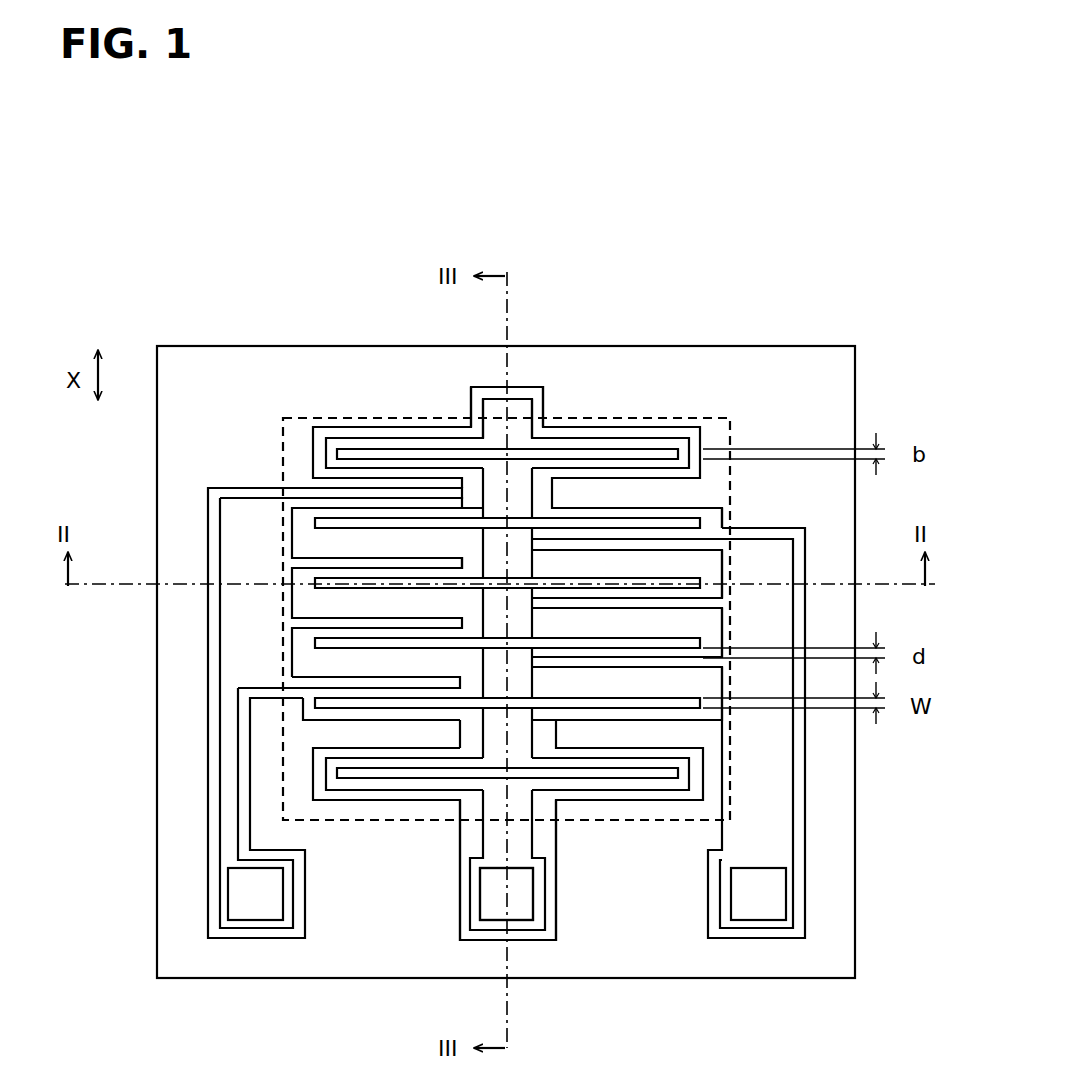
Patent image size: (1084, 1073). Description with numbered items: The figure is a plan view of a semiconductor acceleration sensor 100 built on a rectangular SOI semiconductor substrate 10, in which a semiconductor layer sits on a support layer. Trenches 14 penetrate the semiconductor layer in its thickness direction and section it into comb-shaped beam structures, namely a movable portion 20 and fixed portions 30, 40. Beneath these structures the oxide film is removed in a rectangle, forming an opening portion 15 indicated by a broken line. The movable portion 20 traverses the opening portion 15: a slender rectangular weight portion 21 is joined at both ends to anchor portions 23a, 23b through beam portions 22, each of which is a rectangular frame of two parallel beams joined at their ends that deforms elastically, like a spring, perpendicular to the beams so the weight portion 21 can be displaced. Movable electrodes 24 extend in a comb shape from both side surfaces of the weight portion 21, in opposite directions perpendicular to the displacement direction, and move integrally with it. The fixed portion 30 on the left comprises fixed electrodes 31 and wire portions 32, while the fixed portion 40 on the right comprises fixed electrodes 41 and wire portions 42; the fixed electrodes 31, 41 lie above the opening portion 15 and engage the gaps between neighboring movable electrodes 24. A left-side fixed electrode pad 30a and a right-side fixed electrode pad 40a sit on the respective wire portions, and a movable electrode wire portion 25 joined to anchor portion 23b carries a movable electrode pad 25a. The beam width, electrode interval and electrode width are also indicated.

The semiconductor acceleration sensor 100 is at (228, 340).
The semiconductor substrate 10 is at (737, 342).
The trenches 14 is at (805, 765).
The opening portion 15 is at (306, 416).
The movable portion 20 is at (411, 665).
The weight portion 21 is at (497, 548).
The beam portions 22 is at (612, 440).
The anchor portion 23a is at (487, 393).
The anchor portion 23b is at (480, 850).
The movable electrodes 24 is at (655, 520).
The movable electrode wire portion 25 is at (535, 890).
The movable electrode pad 25a is at (510, 905).
The fixed portion 30 is at (281, 759).
The left-side fixed electrode pad 30a is at (250, 905).
The fixed electrodes 31 is at (380, 682).
The wire portions 32 is at (240, 565).
The fixed portion 40 is at (739, 769).
The right-side fixed electrode pad 40a is at (760, 905).
The fixed electrodes 41 is at (655, 545).
The wire portions 42 is at (765, 630).